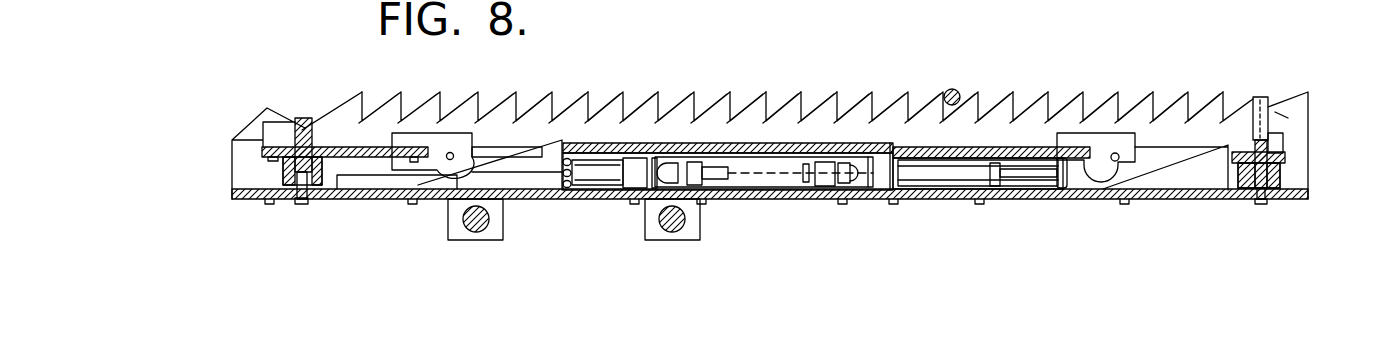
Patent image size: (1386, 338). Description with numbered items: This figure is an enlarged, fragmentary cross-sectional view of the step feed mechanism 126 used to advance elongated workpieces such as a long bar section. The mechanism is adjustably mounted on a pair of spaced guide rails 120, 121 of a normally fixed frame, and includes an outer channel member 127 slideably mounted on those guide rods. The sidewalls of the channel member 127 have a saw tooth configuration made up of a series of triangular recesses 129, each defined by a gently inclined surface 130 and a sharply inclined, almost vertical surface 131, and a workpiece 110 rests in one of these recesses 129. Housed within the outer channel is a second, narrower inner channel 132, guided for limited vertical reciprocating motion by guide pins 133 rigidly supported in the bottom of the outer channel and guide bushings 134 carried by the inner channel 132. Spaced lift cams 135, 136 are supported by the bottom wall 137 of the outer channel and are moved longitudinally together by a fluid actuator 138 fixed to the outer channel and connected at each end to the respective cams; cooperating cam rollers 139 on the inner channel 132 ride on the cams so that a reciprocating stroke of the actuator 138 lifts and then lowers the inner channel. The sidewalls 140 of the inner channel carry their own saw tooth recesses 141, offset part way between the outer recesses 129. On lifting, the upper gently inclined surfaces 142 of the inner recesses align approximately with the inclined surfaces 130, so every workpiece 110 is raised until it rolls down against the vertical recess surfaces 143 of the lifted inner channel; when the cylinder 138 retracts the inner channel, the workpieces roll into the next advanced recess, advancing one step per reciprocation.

The workpiece 110 is at (962, 97).
The guide rail 120 is at (480, 231).
The guide rail 121 is at (678, 232).
The step feed mechanism 126 is at (1307, 110).
The channel member 127 is at (1300, 152).
The triangular recess 129 is at (1013, 103).
The gently inclined surface 130 is at (1292, 122).
The sharply inclined surface 131 is at (1272, 97).
The inner channel 132 is at (600, 128).
The guide pin 133 is at (302, 118).
The guide bushing 134 is at (290, 182).
The lift cam 135 is at (527, 178).
The lift cam 136 is at (1190, 180).
The bottom wall 137 is at (916, 198).
The fluid actuator 138 is at (748, 192).
The cam roller 139 is at (447, 198).
The sidewall 140 is at (738, 110).
The recess 141 is at (805, 110).
The gently inclined surface 142 is at (1053, 92).
The vertical recess surface 143 is at (935, 104).